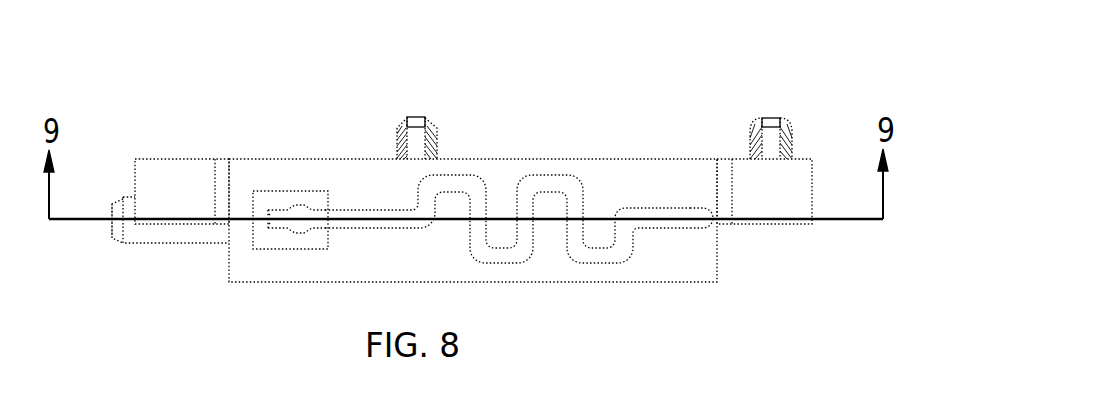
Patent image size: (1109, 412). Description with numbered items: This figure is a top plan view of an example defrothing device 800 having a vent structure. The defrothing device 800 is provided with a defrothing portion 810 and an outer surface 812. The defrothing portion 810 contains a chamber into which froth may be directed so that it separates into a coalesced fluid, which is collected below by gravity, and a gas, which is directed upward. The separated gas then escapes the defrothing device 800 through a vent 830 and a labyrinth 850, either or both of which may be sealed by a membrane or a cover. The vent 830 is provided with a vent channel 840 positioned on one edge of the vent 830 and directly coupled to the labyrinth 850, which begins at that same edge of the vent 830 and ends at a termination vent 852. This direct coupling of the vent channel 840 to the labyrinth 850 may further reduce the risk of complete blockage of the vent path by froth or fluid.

The defrothing device 800 is at (823, 125).
The defrothing portion 810 is at (717, 259).
The outer surface 812 is at (653, 178).
The vent 830 is at (317, 198).
The vent channel 840 is at (280, 210).
The labyrinth 850 is at (560, 178).
The termination vent 852 is at (697, 230).